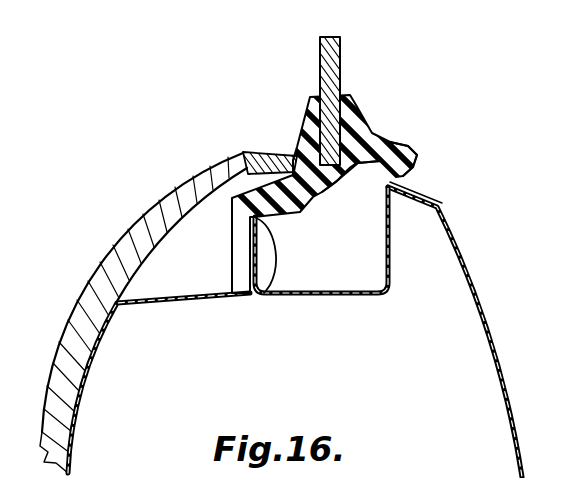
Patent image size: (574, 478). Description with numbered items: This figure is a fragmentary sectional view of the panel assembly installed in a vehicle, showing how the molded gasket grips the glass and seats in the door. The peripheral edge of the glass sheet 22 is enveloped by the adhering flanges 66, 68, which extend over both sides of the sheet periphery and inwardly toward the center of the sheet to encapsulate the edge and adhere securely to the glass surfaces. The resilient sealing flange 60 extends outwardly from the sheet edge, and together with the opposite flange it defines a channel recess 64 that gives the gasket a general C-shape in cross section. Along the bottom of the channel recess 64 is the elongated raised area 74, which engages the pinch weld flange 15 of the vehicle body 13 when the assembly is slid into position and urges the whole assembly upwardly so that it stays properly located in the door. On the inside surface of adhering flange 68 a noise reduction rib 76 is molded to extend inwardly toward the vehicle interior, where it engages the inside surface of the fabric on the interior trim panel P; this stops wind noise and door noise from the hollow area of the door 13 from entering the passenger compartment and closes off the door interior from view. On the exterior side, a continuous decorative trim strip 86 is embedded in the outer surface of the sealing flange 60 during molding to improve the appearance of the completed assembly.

The interior trim panel P is at (155, 202).
The vehicle body 13 is at (100, 381).
The pinch weld flange 15 is at (263, 300).
The glass sheet 22 is at (341, 67).
The sealing flange 60 is at (427, 186).
The channel recess 64 is at (337, 183).
The adhering flange 66 is at (325, 180).
The adhering flange 68 is at (325, 180).
The raised area 74 is at (283, 207).
The noise reduction rib 76 is at (230, 157).
The trim strip 86 is at (417, 160).